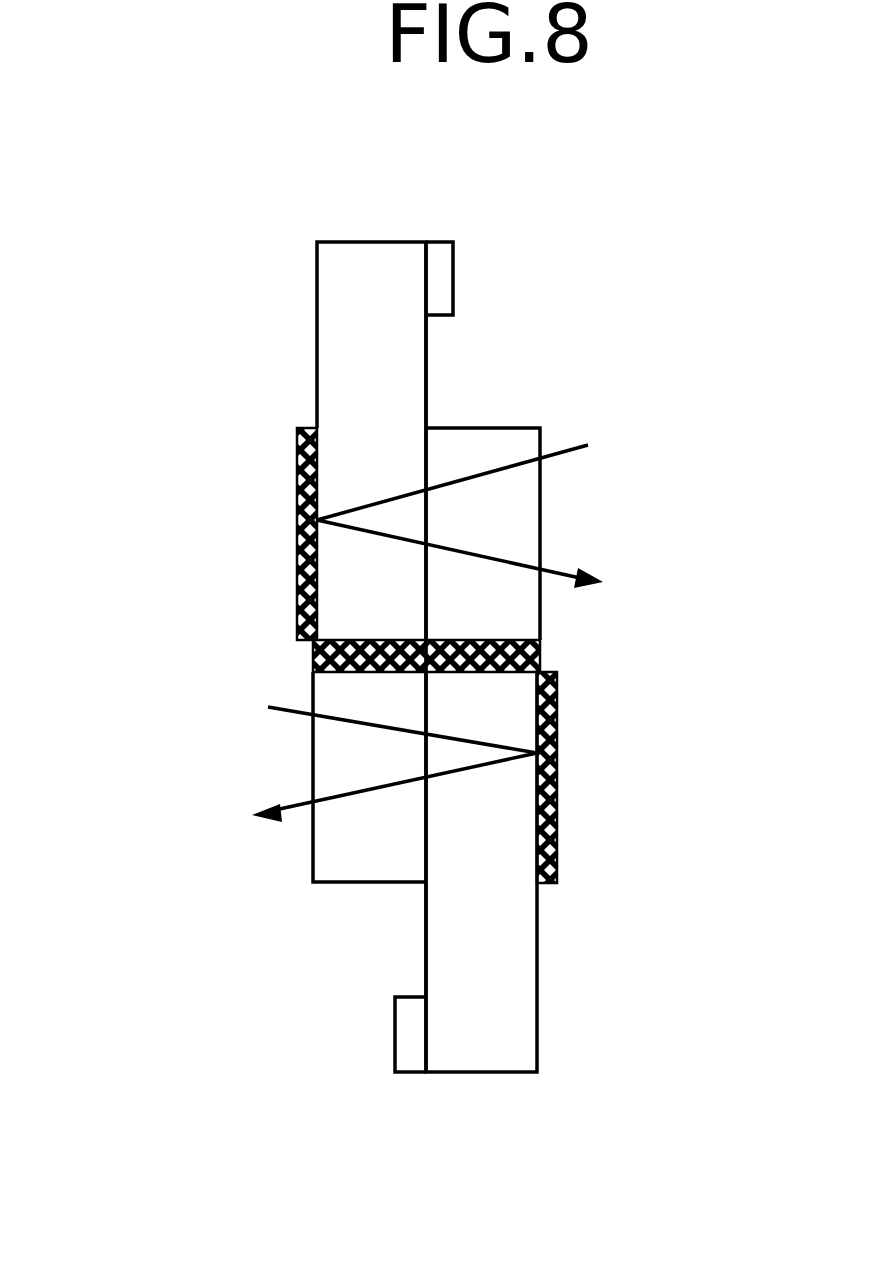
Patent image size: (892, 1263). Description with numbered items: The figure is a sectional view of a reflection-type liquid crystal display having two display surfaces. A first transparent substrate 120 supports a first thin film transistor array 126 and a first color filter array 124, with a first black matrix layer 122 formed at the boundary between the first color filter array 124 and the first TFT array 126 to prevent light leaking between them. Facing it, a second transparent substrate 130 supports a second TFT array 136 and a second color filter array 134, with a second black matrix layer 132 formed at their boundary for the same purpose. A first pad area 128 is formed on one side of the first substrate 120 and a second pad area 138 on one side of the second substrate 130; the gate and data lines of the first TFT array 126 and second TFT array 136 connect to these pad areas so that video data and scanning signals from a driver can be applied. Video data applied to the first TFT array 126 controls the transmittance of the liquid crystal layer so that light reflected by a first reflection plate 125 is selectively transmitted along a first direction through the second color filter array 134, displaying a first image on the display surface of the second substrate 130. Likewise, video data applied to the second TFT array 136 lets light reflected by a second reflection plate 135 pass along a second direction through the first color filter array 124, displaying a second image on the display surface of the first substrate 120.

The first transparent substrate 120 is at (574, 1076).
The first black matrix layer 122 is at (542, 651).
The first color filter array 124 is at (495, 432).
The first reflection plate 125 is at (557, 813).
The first thin film transistor array 126 is at (493, 1062).
The first pad area 128 is at (410, 1062).
The second transparent substrate 130 is at (278, 236).
The second black matrix layer 132 is at (313, 660).
The second color filter array 134 is at (370, 870).
The second reflection plate 135 is at (297, 457).
The second thin film transistor array 136 is at (358, 246).
The second pad area 138 is at (440, 246).